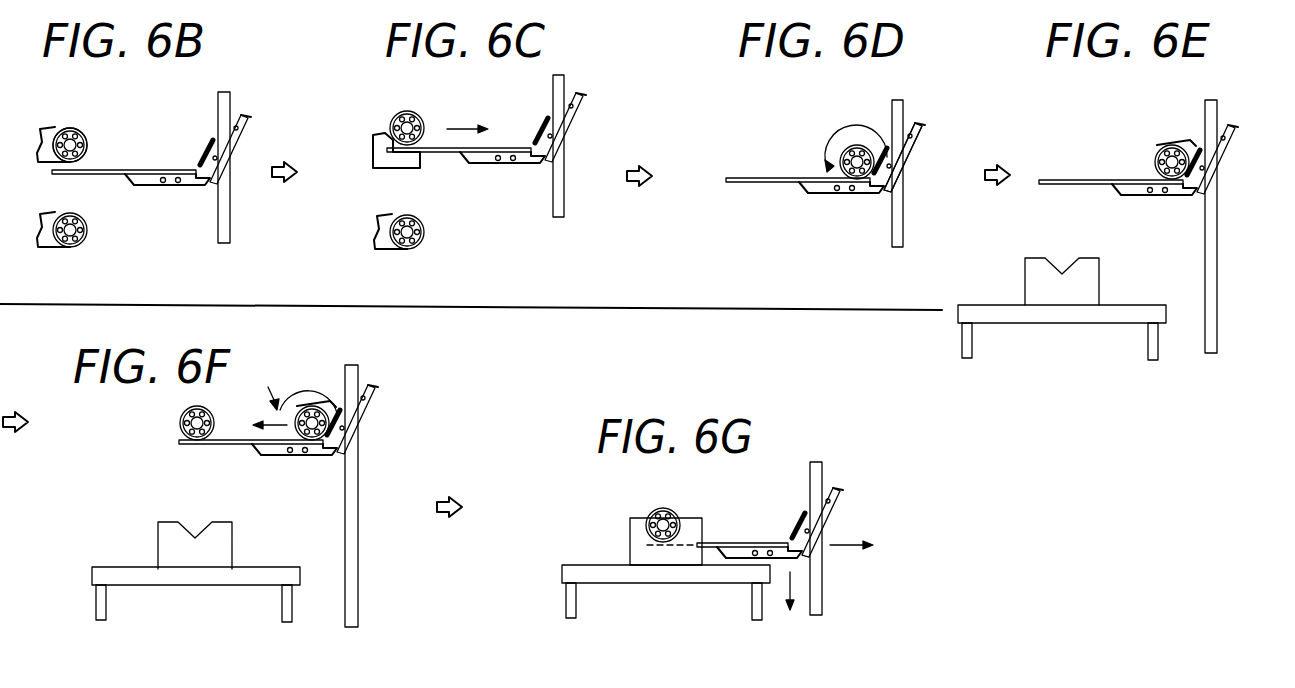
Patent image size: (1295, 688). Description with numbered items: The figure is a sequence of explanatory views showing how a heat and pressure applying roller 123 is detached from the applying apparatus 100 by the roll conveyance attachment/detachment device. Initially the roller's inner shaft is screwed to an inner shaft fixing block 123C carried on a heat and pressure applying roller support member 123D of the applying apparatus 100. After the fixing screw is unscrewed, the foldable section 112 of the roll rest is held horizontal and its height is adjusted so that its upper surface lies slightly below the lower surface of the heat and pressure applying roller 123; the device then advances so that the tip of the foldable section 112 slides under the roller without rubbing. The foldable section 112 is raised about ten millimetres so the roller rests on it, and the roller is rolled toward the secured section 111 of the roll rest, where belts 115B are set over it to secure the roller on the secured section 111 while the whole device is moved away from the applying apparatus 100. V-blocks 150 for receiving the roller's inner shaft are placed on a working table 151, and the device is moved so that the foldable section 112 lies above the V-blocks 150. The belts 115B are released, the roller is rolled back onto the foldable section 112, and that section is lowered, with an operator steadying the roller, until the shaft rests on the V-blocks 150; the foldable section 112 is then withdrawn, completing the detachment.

In FIG. 6D, the frame post 100 is at (905, 185).
In FIG. 6D, the secured section 111 is at (915, 127).
In FIG. 6D, the foldable section 112 is at (735, 182).
In FIG. 6D, the belts 115B is at (828, 147).
In FIG. 6B, the heat and pressure applying roller 123 is at (110, 125).
In FIG. 6B, the inner shaft fixing block 123C is at (89, 143).
In FIG. 6B, the heat and pressure applying roller support member 123D is at (62, 130).
In FIG. 6E, the V-blocks 150 is at (1025, 270).
In FIG. 6E, the working table 151 is at (1035, 325).